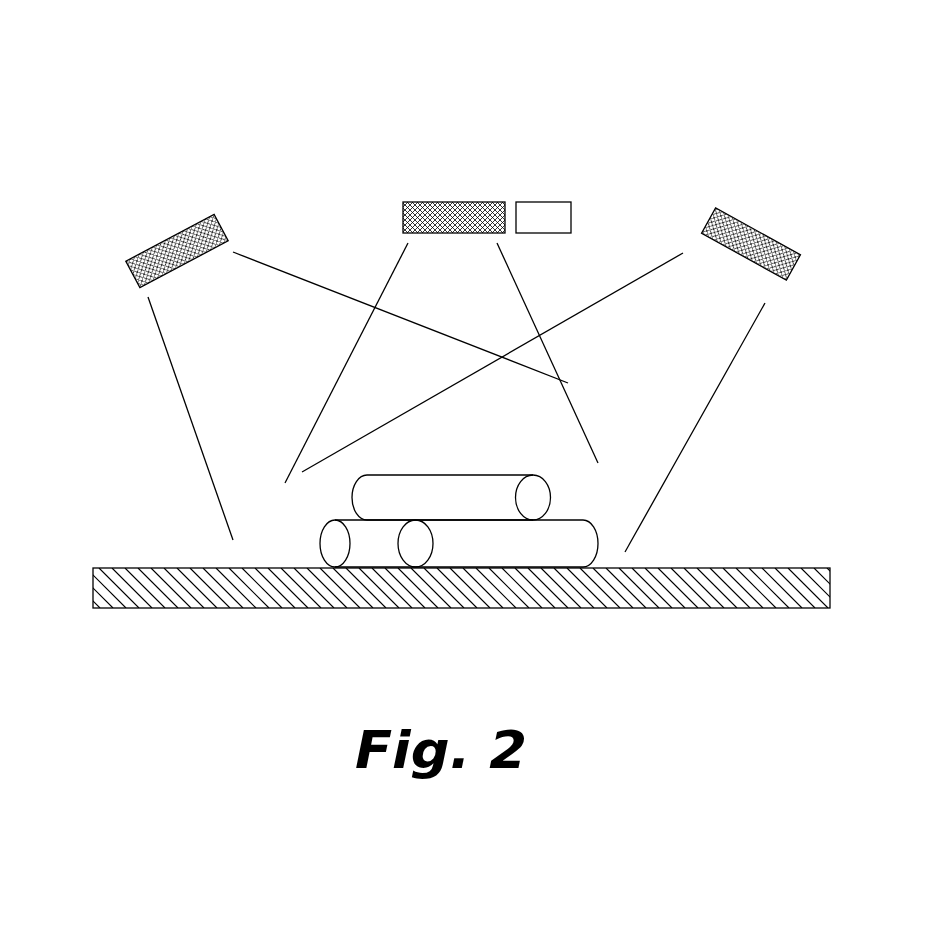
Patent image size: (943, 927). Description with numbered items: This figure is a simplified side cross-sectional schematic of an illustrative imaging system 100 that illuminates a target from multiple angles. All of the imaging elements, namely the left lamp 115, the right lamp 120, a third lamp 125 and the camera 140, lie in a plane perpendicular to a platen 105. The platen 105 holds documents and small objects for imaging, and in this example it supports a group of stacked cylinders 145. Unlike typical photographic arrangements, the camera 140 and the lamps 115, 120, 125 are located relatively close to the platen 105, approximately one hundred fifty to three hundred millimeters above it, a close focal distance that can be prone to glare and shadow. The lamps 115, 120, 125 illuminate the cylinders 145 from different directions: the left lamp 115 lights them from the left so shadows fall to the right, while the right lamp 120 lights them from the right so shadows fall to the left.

The imaging system 100 is at (98, 90).
The platen 105 is at (163, 582).
The left lamp 115 is at (148, 262).
The right lamp 120 is at (738, 232).
The lamp 125 is at (438, 208).
The camera 140 is at (537, 203).
The stacked cylinders 145 is at (469, 485).